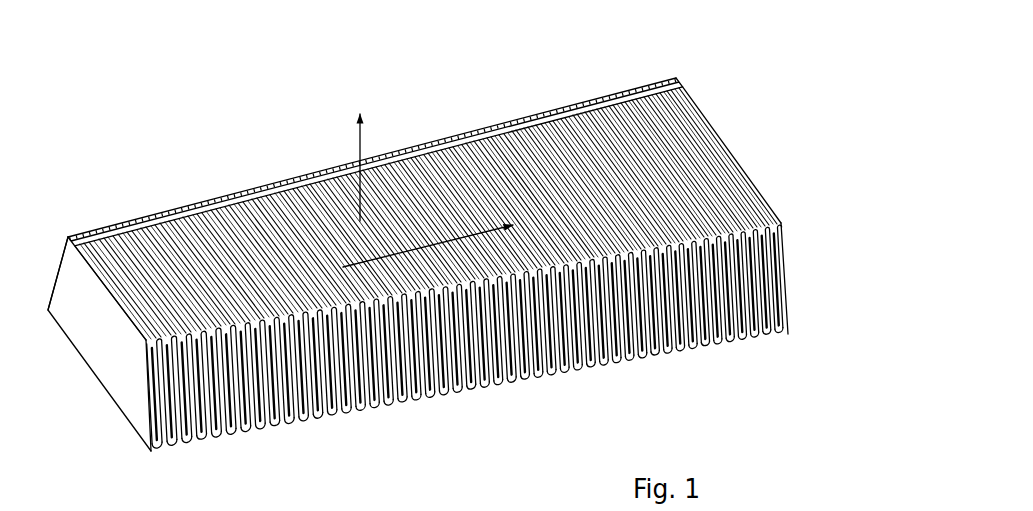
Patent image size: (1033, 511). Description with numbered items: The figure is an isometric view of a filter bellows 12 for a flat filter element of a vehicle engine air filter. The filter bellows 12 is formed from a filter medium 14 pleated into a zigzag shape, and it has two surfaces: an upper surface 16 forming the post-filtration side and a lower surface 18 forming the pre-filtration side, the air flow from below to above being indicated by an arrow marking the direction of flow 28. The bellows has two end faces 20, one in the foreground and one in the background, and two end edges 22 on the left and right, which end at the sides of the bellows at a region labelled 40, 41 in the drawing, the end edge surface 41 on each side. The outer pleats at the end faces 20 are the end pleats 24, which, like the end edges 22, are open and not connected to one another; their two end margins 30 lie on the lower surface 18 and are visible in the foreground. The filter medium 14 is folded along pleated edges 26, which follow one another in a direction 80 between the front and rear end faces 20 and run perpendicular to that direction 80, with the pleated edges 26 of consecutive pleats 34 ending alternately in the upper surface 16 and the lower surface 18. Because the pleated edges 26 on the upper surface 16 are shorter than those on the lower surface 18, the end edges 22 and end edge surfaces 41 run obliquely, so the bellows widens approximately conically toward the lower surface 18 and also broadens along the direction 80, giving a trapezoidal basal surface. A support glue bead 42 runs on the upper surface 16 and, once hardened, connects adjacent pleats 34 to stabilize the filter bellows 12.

The filter bellows 12 is at (429, 265).
The filter medium 14 is at (597, 105).
The upper surface 16 is at (636, 104).
The lower surface 18 is at (479, 367).
The end face 20 is at (54, 266).
The end edge 22 is at (446, 120).
The end pleat 24 is at (136, 385).
The pleated edge 26 is at (220, 183).
The direction of flow 28 is at (375, 165).
The end margin 30 is at (83, 362).
The pleat 34 is at (467, 388).
The first fin set 40 is at (465, 336).
The end edge surface 41 is at (405, 412).
The support glue bead 42 is at (493, 124).
The direction 80 is at (428, 244).